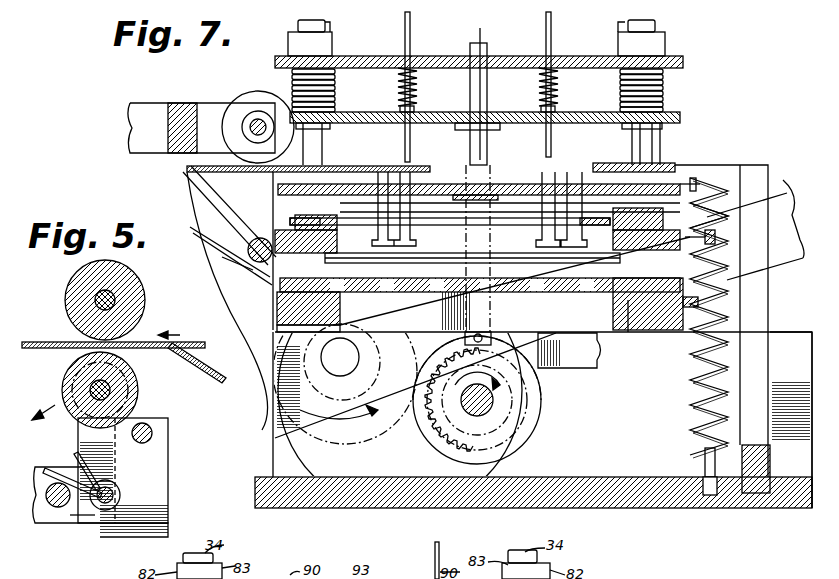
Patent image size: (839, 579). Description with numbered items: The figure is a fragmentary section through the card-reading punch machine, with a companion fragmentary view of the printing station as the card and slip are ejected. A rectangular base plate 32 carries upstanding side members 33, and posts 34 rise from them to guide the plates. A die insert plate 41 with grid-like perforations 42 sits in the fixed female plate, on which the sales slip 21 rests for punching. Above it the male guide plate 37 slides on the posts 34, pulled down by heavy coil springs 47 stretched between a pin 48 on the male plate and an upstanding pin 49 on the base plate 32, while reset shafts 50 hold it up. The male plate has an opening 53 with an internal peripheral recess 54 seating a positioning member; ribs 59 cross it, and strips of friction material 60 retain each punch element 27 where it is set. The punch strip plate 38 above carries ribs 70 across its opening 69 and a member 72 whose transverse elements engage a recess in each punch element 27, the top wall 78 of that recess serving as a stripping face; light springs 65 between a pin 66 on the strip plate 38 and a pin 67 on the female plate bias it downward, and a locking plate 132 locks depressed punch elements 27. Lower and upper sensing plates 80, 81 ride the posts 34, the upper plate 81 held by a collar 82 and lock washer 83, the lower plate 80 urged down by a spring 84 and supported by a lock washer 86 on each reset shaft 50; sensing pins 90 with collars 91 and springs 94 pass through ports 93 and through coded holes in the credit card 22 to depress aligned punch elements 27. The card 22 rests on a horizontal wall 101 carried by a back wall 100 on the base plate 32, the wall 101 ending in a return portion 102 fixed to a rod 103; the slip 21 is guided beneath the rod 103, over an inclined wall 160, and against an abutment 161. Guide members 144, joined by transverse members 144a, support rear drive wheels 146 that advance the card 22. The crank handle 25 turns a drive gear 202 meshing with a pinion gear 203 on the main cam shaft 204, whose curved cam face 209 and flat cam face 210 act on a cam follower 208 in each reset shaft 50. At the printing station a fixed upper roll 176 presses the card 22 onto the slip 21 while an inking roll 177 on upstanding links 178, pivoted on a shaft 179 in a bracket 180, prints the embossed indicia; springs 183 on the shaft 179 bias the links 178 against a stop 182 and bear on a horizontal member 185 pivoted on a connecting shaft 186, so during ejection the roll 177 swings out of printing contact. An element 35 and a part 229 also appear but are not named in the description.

In FIG. 5, the sales slip 21 is at (222, 378).
In FIG. 5, the credit card 22 is at (180, 342).
In FIG. 7, the crank handle 25 is at (787, 193).
In FIG. 7, the punch elements 27 is at (395, 208).
In FIG. 7, the base plate 32 is at (598, 508).
In FIG. 7, the side members 33 is at (797, 505).
In FIG. 7, the posts 34 is at (310, 20).
In FIG. 7, the shaft 35 is at (322, 335).
In FIG. 7, the male guide plate 37 is at (625, 236).
In FIG. 7, the punch strip plate 38 is at (278, 191).
In FIG. 7, the die insert plate 41 is at (597, 292).
In FIG. 7, the perforations 42 is at (524, 292).
In FIG. 7, the biasing coil springs 47 is at (694, 436).
In FIG. 7, the outwardly projecting pin 48 is at (715, 238).
In FIG. 7, the upstanding pin 49 is at (705, 462).
In FIG. 7, the reset shafts 50 is at (487, 90).
In FIG. 7, the opening 53 is at (293, 222).
In FIG. 7, the internal peripheral recess 54 is at (337, 240).
In FIG. 7, the ribs 59 is at (455, 200).
In FIG. 7, the strips of friction material 60 is at (500, 226).
In FIG. 7, the springs 65 is at (705, 215).
In FIG. 7, the outwardly projecting pin 66 is at (692, 183).
In FIG. 7, the outwardly projecting pin 67 is at (685, 307).
In FIG. 7, the opening 69 is at (625, 200).
In FIG. 7, the ribs 70 is at (510, 205).
In FIG. 7, the member 72 is at (672, 172).
In FIG. 7, the top wall 78 is at (590, 166).
In FIG. 7, the lower sensing plate 80 is at (680, 118).
In FIG. 7, the upper sensing plate 81 is at (683, 62).
In FIG. 7, the collar 82 is at (330, 45).
In FIG. 7, the lock washer 83 is at (330, 27).
In FIG. 7, the spring 84 is at (337, 90).
In FIG. 7, the lock washer 86 is at (486, 130).
In FIG. 7, the sensing pins 90 is at (410, 32).
In FIG. 7, the collar 91 is at (402, 108).
In FIG. 7, the port 93 is at (483, 60).
In FIG. 7, the spring 94 is at (415, 90).
In FIG. 7, the back wall 100 is at (770, 290).
In FIG. 7, the horizontal wall 101 is at (730, 165).
In FIG. 7, the return wall portion 102 is at (190, 190).
In FIG. 7, the rod 103 is at (247, 250).
In FIG. 7, the locking plate 132 is at (418, 262).
In FIG. 7, the guide members 144 is at (128, 136).
In FIG. 7, the transverse members 144a is at (180, 103).
In FIG. 7, the rear frictional drive wheels 146 is at (250, 95).
In FIG. 7, the inclined wall 160 is at (205, 285).
In FIG. 7, the abutment means 161 is at (628, 332).
In FIG. 5, the upper roll 176 is at (135, 275).
In FIG. 5, the inking roll 177 is at (138, 388).
In FIG. 5, the upstanding links 178 is at (125, 458).
In FIG. 5, the shaft 179 is at (120, 495).
In FIG. 5, the bracket 180 is at (125, 530).
In FIG. 5, the stop 182 is at (152, 434).
In FIG. 5, the spring means 183 is at (68, 470).
In FIG. 5, the horizontal member 185 is at (75, 515).
In FIG. 5, the connecting shaft 186 is at (58, 505).
In FIG. 7, the drive gear 202 is at (290, 452).
In FIG. 7, the pinion gear 203 is at (541, 420).
In FIG. 7, the main cam shaft 204 is at (478, 415).
In FIG. 7, the cam follower 208 is at (569, 350).
In FIG. 7, the curved cam face 209 is at (435, 445).
In FIG. 7, the flat cam face 210 is at (520, 396).
In FIG. 7, the roller axle 229 is at (252, 122).